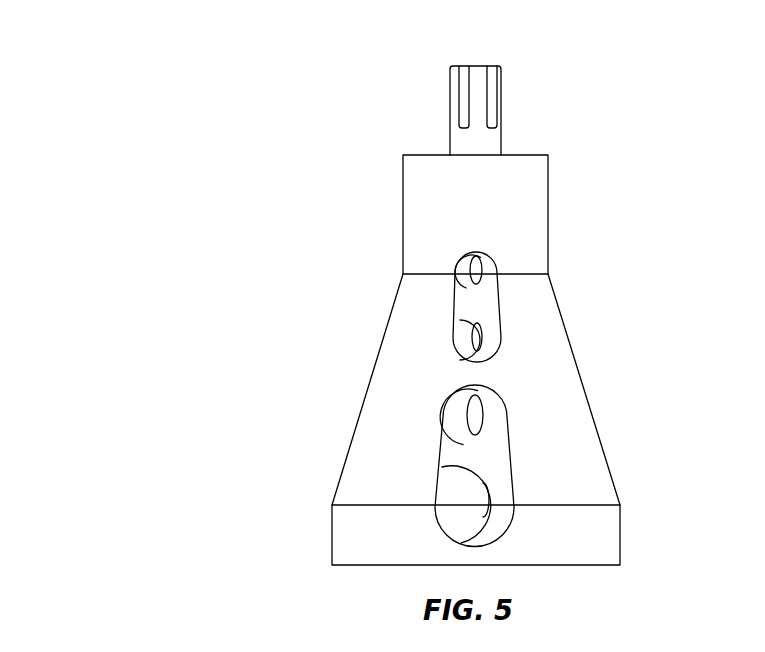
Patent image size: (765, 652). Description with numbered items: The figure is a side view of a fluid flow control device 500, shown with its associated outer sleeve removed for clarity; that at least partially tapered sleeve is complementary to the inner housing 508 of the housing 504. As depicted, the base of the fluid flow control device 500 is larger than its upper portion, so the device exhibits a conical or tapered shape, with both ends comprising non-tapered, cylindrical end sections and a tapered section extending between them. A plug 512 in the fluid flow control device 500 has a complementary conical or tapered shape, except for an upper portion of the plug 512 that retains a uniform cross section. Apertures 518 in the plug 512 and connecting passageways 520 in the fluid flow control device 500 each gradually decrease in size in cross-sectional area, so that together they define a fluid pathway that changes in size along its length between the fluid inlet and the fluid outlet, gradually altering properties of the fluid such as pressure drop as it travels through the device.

The fluid flow control device 500 is at (96, 96).
The housing 504 is at (380, 492).
The inner housing 508 is at (425, 207).
The plug 512 is at (478, 124).
The apertures 518 is at (455, 263).
The connecting passageways 520 is at (490, 300).